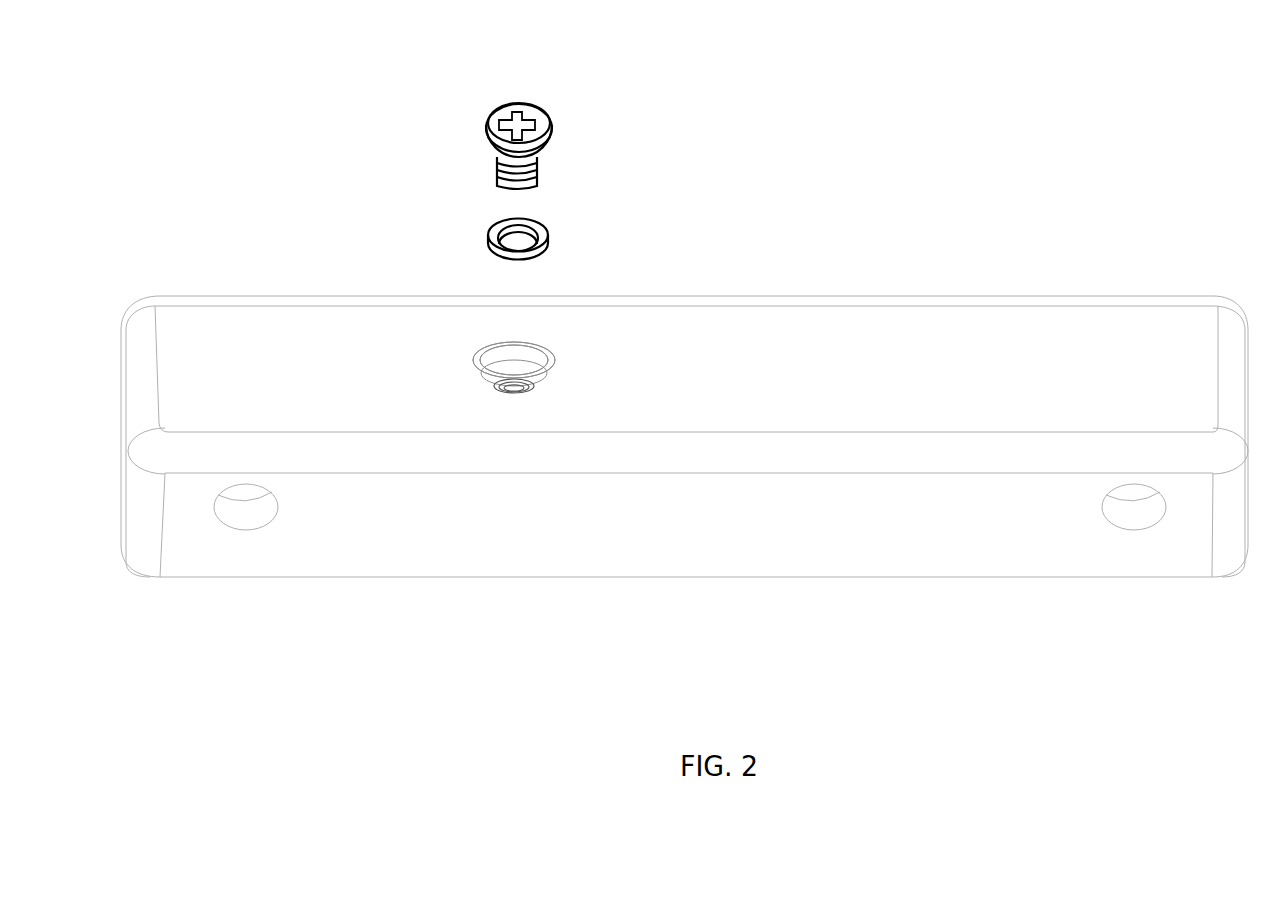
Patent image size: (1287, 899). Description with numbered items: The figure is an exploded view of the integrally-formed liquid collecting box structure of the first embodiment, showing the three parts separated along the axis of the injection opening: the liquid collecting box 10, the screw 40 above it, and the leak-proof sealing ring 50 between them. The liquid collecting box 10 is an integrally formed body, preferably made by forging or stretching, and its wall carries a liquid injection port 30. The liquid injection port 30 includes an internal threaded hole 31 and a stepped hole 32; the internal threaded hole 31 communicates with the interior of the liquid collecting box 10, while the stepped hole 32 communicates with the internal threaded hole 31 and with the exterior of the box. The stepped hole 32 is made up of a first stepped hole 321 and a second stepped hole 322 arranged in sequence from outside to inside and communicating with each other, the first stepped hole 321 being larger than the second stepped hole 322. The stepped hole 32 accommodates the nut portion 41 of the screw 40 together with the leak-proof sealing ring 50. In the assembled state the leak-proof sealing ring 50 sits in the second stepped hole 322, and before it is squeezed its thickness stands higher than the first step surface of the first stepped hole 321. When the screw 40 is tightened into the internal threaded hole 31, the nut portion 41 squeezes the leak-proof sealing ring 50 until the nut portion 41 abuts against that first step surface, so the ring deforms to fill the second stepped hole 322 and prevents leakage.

The liquid collecting box 10 is at (669, 539).
The liquid injection port 30 is at (528, 355).
The internal threaded hole 31 is at (513, 393).
The stepped hole 32 is at (424, 288).
The first stepped hole 321 is at (485, 363).
The second stepped hole 322 is at (493, 382).
The screw 40 is at (600, 110).
The nut portion 41 is at (538, 120).
The leak-proof sealing ring 50 is at (553, 235).